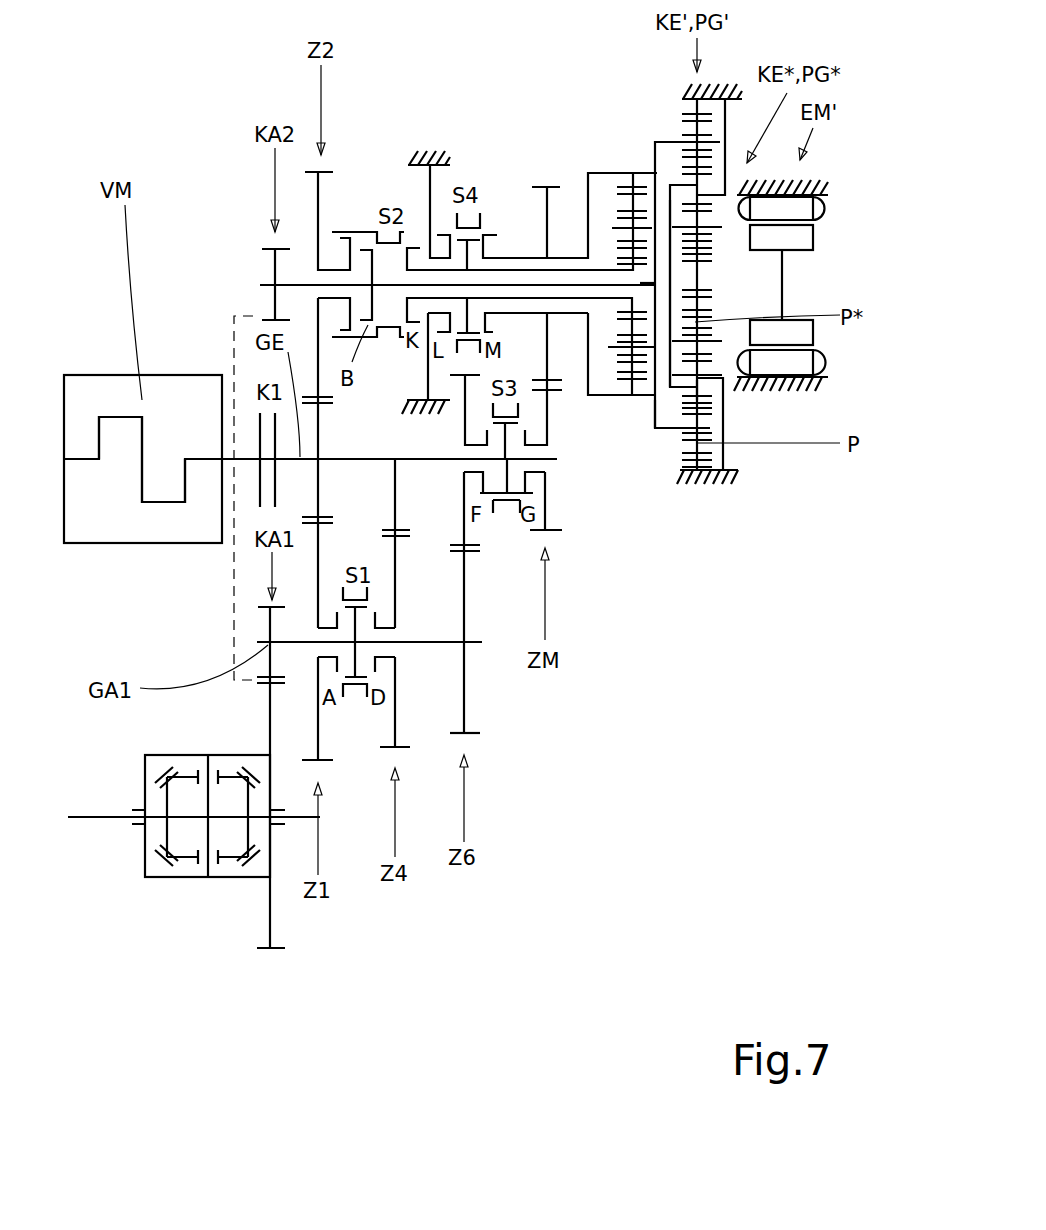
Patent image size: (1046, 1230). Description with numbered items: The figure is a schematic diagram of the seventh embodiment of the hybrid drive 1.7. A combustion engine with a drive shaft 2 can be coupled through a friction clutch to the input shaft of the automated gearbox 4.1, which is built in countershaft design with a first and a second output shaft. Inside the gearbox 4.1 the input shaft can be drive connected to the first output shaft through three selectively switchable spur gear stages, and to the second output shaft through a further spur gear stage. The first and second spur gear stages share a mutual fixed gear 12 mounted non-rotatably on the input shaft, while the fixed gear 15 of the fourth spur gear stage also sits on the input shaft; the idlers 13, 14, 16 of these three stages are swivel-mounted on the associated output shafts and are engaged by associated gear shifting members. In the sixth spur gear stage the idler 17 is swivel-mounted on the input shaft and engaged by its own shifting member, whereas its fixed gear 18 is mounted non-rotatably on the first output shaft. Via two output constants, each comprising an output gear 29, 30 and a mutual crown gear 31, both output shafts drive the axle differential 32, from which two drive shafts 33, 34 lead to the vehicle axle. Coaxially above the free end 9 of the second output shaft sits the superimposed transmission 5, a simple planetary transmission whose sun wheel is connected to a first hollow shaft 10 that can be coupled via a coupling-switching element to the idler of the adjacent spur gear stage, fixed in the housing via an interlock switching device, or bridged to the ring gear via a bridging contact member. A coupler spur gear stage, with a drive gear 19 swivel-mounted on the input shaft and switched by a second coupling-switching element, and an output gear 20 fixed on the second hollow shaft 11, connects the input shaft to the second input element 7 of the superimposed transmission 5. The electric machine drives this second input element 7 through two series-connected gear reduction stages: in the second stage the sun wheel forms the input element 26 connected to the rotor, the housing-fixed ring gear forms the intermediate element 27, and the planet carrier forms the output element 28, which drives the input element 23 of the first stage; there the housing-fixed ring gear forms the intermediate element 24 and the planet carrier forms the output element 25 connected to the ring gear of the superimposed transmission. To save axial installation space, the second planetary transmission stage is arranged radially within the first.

The hybrid drive 1.7 is at (160, 74).
The drive shaft 2 is at (205, 457).
The automated gearbox 4.1 is at (637, 726).
The superimposed transmission 5 is at (632, 158).
The second input element 7 is at (625, 396).
The free end 9 is at (642, 283).
The first hollow shaft 10 is at (578, 265).
The second hollow shaft 11 is at (545, 223).
The fixed gear 12 is at (318, 478).
The idler 13 is at (318, 717).
The idler 14 is at (322, 202).
The fixed gear 15 is at (395, 478).
The idler 16 is at (397, 708).
The idler 17 is at (465, 525).
The fixed gear 18 is at (465, 680).
The drive gear 19 is at (547, 503).
The output gear 20 is at (520, 257).
The input element 23 is at (690, 393).
The intermediate element 24 is at (710, 462).
The output element 25 is at (667, 430).
The input element 26 is at (695, 298).
The intermediate element 27 is at (725, 400).
The output element 28 is at (668, 378).
The output gear 29 is at (268, 622).
The output gear 30 is at (270, 270).
The crown gear 31 is at (268, 705).
The axle differential 32 is at (187, 802).
The drive shaft 33 is at (102, 820).
The drive shaft 34 is at (350, 832).